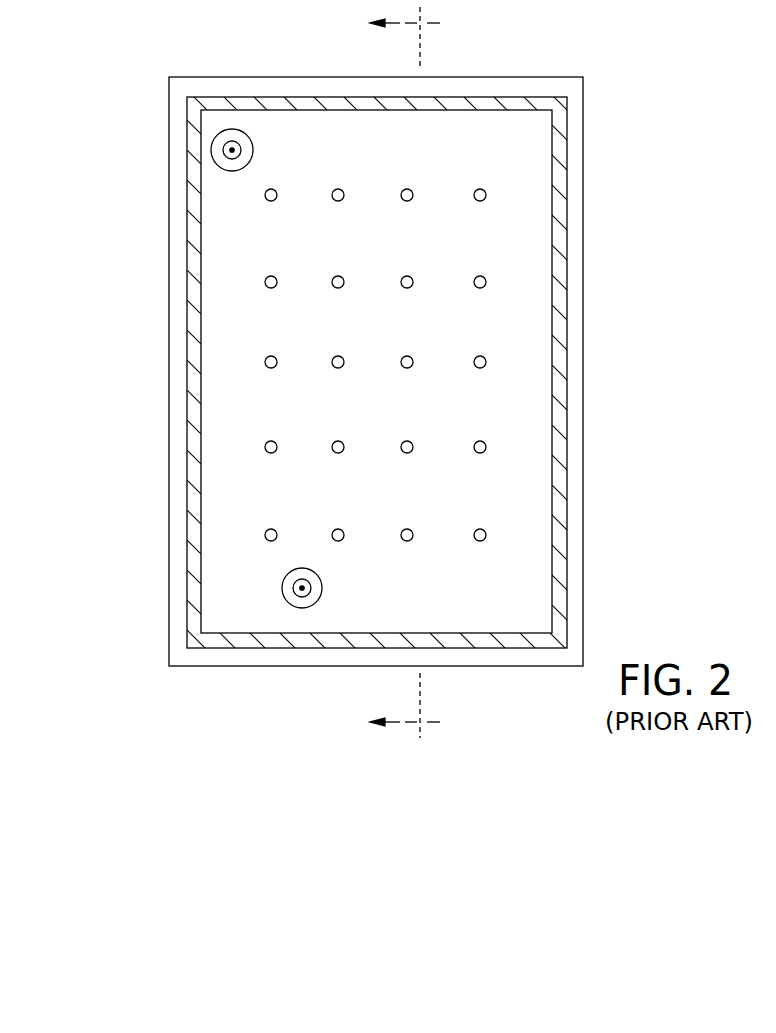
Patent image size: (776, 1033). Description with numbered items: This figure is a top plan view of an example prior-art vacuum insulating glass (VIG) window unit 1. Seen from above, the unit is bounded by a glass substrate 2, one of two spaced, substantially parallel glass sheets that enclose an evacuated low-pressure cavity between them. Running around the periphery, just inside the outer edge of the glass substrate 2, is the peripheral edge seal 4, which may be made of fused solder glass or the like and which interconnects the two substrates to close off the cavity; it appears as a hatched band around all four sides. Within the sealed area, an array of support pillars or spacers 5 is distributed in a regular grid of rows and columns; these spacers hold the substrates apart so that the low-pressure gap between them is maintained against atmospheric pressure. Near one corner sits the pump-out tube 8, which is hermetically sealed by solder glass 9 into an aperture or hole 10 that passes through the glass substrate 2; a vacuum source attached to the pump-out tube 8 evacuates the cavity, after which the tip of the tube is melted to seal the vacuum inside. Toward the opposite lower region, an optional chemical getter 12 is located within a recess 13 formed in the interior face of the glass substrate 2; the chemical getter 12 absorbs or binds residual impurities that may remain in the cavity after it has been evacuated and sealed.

The VIG window unit 1 is at (154, 550).
The glass substrate 2 is at (370, 77).
The peripheral edge seal 4 is at (293, 107).
The support pillars/spacers 5 is at (490, 279).
The pump-out tube 8 is at (229, 149).
The solder glass 9 is at (233, 171).
The aperture/hole 10 is at (224, 157).
The chemical getter 12 is at (300, 590).
The recess 13 is at (322, 588).